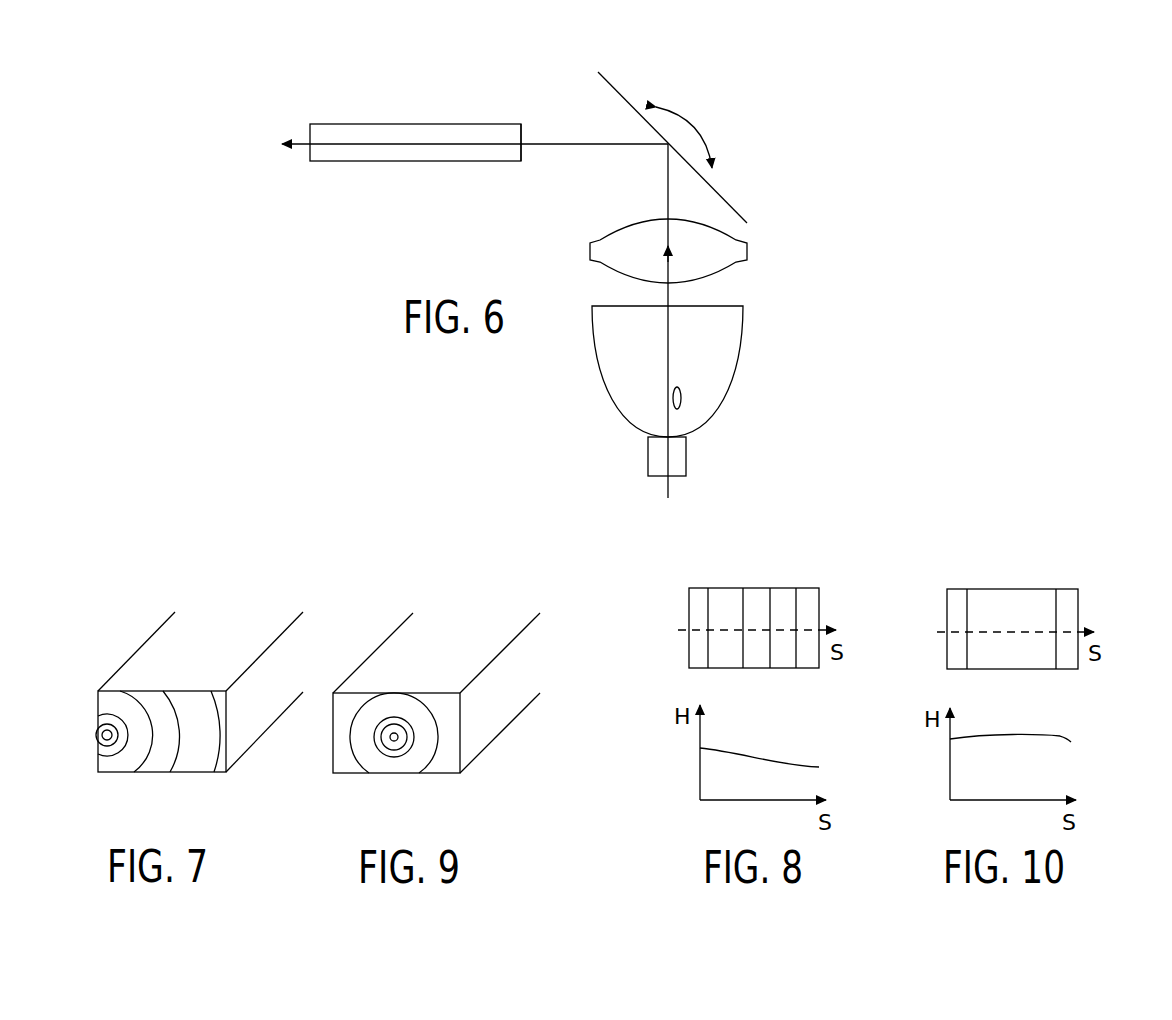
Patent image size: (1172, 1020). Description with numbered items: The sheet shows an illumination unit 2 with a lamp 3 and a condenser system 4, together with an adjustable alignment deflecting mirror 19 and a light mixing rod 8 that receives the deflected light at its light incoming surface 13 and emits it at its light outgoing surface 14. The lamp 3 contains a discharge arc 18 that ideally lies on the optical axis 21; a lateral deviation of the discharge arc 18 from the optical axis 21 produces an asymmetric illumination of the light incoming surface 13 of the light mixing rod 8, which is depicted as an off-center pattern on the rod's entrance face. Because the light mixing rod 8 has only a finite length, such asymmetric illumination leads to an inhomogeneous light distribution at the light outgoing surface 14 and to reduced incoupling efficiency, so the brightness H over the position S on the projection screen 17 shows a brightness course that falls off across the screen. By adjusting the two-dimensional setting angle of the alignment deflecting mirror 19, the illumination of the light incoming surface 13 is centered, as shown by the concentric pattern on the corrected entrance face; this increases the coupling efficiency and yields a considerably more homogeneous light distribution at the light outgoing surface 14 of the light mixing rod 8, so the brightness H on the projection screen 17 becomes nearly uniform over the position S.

In FIG. 6, the illumination unit 2 is at (836, 288).
In FIG. 6, the lamp 3 is at (740, 360).
In FIG. 6, the condenser system 4 is at (748, 252).
In FIG. 6, the light mixing rod 8 is at (414, 123).
In FIG. 7, the light mixing rod 8 is at (147, 645).
In FIG. 9, the light mixing rod 8 is at (378, 647).
In FIG. 6, the light incoming surface 13 is at (521, 131).
In FIG. 7, the light incoming surface 13 is at (153, 762).
In FIG. 9, the light incoming surface 13 is at (390, 762).
In FIG. 6, the light outgoing surface 14 is at (310, 133).
In FIG. 8, the projection screen 17 is at (760, 598).
In FIG. 10, the projection screen 17 is at (1017, 600).
In FIG. 6, the discharge arc 18 is at (682, 398).
In FIG. 6, the alignment deflecting mirror 19 is at (720, 196).
In FIG. 6, the optical axis 21 is at (436, 146).